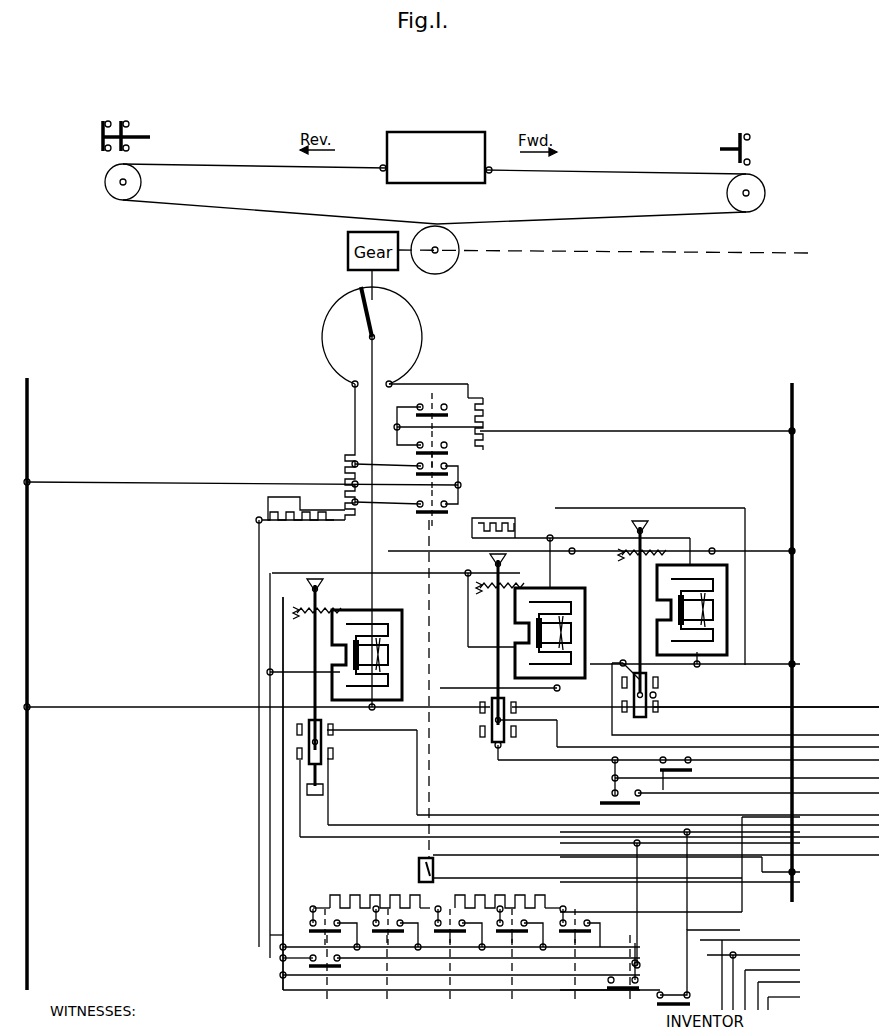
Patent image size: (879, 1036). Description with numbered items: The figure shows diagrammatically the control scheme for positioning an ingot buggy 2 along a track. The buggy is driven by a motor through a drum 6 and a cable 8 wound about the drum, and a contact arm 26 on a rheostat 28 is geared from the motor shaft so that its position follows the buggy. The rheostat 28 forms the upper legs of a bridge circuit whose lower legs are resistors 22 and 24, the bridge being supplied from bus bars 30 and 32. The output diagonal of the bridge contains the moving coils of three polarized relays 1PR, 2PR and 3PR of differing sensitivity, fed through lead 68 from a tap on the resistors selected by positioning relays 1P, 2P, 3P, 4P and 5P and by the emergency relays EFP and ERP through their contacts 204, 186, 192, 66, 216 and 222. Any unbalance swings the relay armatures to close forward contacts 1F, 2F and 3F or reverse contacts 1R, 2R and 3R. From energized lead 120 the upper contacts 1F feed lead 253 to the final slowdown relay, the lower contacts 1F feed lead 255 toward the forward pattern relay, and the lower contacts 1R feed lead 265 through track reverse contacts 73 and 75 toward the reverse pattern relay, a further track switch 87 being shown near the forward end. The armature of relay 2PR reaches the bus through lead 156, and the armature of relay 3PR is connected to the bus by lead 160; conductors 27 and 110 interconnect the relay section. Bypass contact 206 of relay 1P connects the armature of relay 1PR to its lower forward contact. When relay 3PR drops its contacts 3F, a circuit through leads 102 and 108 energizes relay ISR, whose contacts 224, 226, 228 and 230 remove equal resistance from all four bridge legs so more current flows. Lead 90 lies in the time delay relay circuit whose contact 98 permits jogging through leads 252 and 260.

The ingot buggy 2 is at (456, 183).
The drum 6 is at (457, 258).
The cable 8 is at (628, 175).
The contact arm 26 is at (360, 320).
The rheostat 28 is at (452, 350).
The bus bar 30 is at (29, 391).
The bus bar 32 is at (789, 392).
The track reverse contact 73 is at (109, 120).
The track reverse contact 75 is at (127, 120).
The limit switch 87 is at (747, 134).
The contact of relay 1SR 230 is at (438, 414).
The contact of relay 1SR 228 is at (418, 452).
The contact of relay 1SR 226 is at (418, 476).
The contact of relay 1SR 224 is at (418, 514).
The conductor 27 is at (370, 555).
The first polarized relay 1PR is at (403, 618).
The second polarized relay 2PR is at (587, 652).
The third polarized relay 3PR is at (718, 566).
The lead 160 is at (684, 666).
The forward contacts 1F is at (300, 740).
The reverse contacts 1R is at (329, 738).
The forward contacts 2F is at (481, 712).
The reverse contacts 2R is at (516, 733).
The forward contacts 3F is at (620, 690).
The reverse contacts 3R is at (657, 683).
The lead 156 is at (531, 760).
The lead 253 is at (497, 818).
The lead 265 is at (394, 823).
The lead 255 is at (373, 840).
The lead 120 is at (288, 862).
The relay ISR is at (433, 866).
The conductor 110 is at (523, 876).
The resistor 22 is at (358, 897).
The resistor 24 is at (519, 894).
The emergency reverse positioning relay ERP is at (680, 892).
The lead 68 is at (270, 935).
The contact of positioning relay 1P 204 is at (318, 927).
The contact of positioning relay 2P 186 is at (396, 928).
The contact of positioning relay 3P 192 is at (459, 928).
The contact of positioning relay 4P 66 is at (521, 928).
The contact of time delay relay 98 is at (579, 927).
The bypass contact 206 is at (460, 972).
The contact of relay EFP 216 is at (610, 970).
The contact of relay ERP 222 is at (688, 1004).
The lead 102 is at (742, 946).
The lead 108 is at (753, 978).
The lead 252 is at (772, 985).
The lead 260 is at (779, 989).
The lead 90 is at (773, 996).
The first positioning relay 1P is at (322, 984).
The second positioning relay 2P is at (382, 984).
The third positioning relay 3P is at (445, 984).
The fourth positioning relay 4P is at (507, 984).
The fifth position 5P is at (570, 984).
The emergency forward positioning relay EFP is at (624, 984).